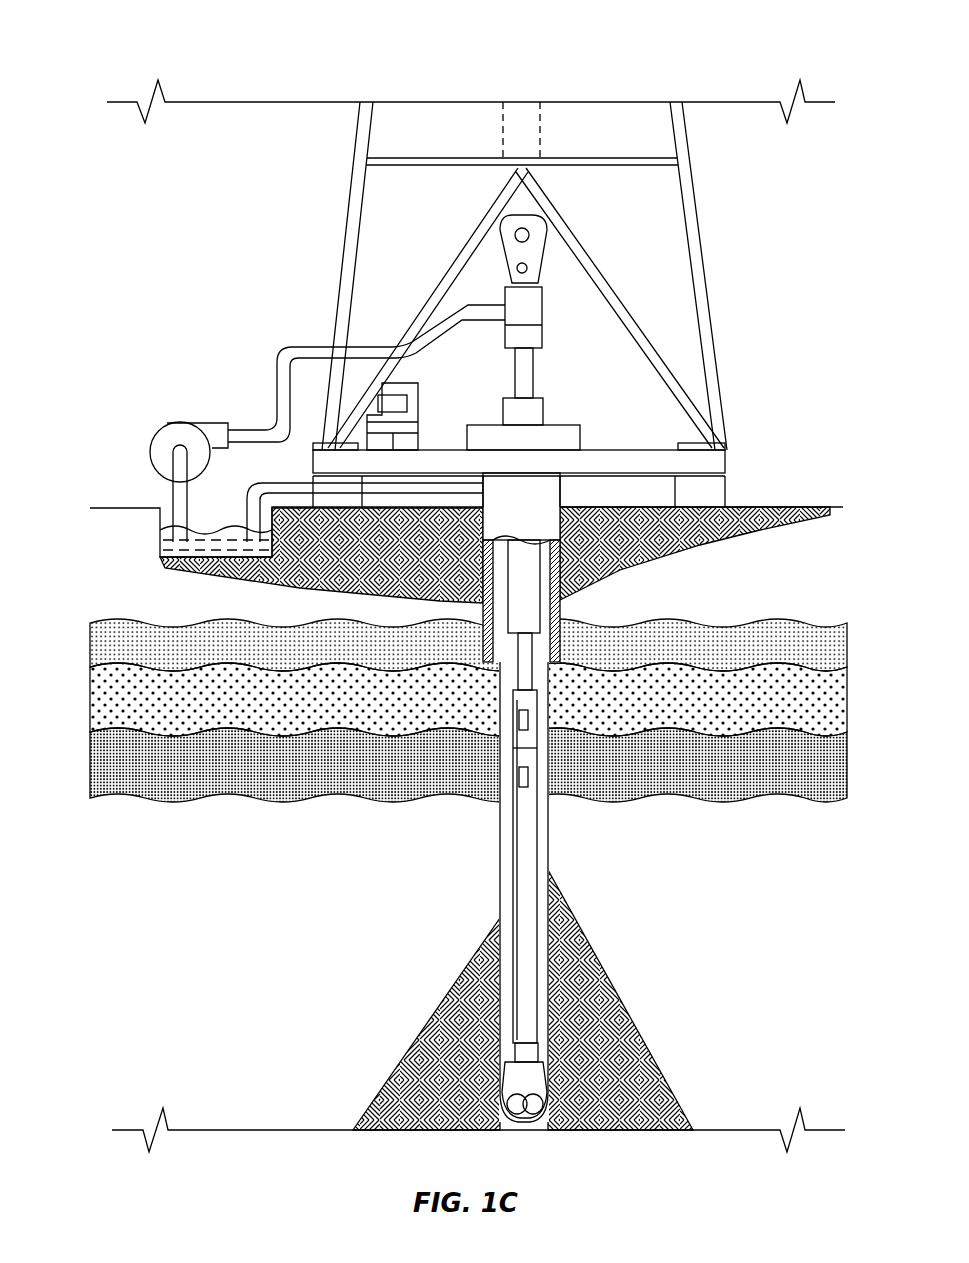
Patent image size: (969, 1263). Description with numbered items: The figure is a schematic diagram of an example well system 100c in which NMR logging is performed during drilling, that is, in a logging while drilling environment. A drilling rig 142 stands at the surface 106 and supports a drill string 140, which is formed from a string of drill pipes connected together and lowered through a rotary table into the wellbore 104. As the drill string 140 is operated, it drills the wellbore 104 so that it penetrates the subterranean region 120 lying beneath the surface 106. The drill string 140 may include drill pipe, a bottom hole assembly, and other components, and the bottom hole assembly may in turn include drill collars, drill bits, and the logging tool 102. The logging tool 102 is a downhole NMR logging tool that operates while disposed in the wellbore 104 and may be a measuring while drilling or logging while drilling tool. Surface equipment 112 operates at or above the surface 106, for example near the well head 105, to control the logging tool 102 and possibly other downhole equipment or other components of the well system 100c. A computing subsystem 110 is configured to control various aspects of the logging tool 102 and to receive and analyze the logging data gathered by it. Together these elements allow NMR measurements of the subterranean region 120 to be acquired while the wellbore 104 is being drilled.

The well system 100c is at (155, 45).
The logging tool 102 is at (513, 872).
The wellbore 104 is at (500, 838).
The well head 105 is at (558, 425).
The surface 106 is at (762, 507).
The computing subsystem 110 is at (403, 383).
The surface equipment 112 is at (745, 247).
The subterranean region 120 is at (686, 601).
The drill string 140 is at (513, 678).
The drilling rig 142 is at (228, 262).